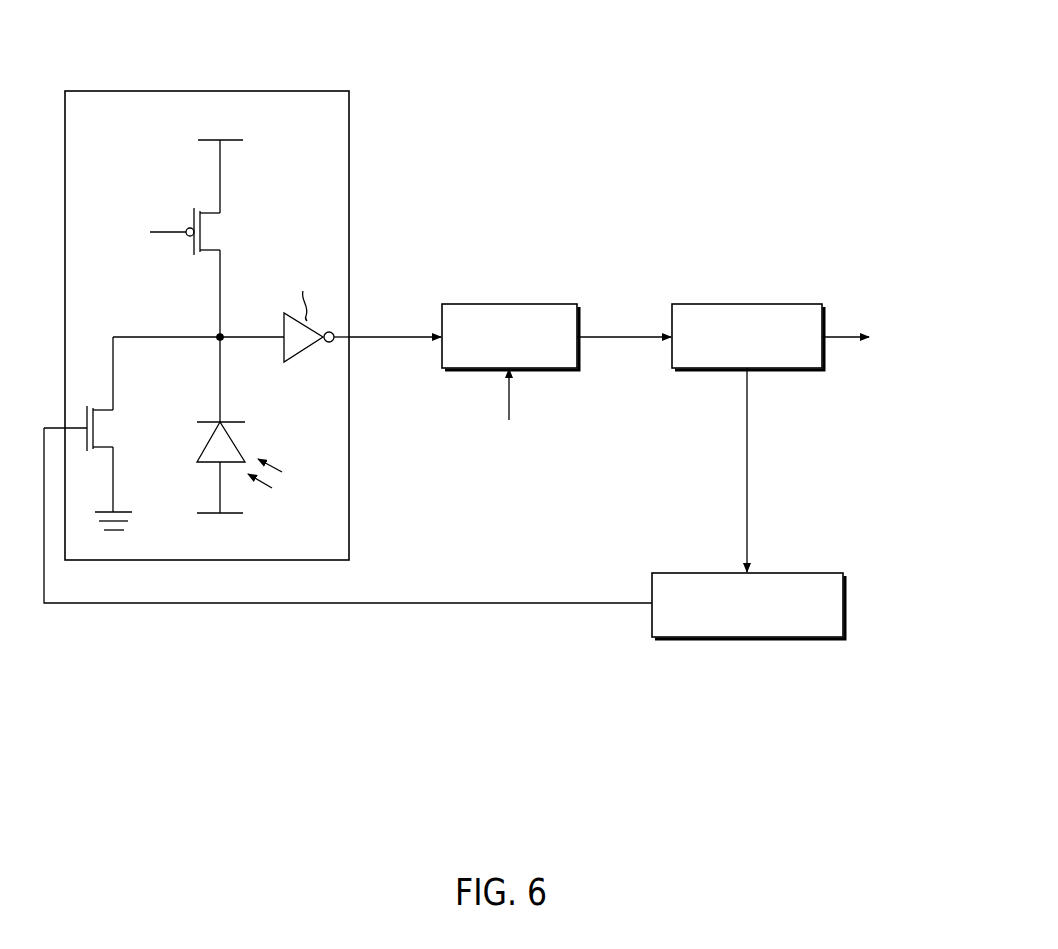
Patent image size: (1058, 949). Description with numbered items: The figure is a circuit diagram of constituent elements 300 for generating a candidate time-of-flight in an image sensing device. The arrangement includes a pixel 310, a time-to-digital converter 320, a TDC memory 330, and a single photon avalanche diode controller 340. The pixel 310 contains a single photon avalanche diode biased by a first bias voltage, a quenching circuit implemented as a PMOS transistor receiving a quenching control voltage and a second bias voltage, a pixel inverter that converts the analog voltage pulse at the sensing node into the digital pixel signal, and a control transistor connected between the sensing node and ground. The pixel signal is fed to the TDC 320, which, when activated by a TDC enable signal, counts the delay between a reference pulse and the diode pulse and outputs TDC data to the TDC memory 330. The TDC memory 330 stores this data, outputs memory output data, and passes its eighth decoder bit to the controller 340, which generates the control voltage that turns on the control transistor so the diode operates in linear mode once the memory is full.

The pixel circuit system 300 is at (758, 37).
The pixel 310 is at (207, 91).
The time-to-digital converter 320 is at (493, 358).
The TDC memory 330 is at (731, 359).
The SPAD controller 340 is at (731, 627).